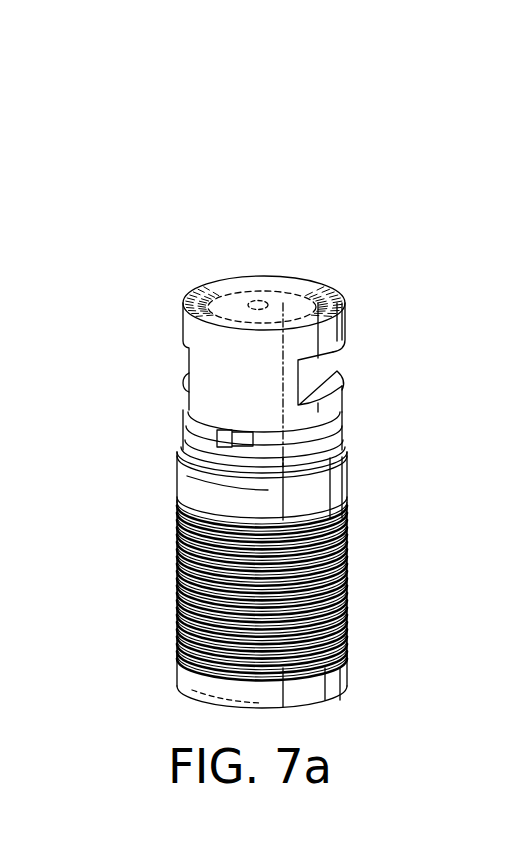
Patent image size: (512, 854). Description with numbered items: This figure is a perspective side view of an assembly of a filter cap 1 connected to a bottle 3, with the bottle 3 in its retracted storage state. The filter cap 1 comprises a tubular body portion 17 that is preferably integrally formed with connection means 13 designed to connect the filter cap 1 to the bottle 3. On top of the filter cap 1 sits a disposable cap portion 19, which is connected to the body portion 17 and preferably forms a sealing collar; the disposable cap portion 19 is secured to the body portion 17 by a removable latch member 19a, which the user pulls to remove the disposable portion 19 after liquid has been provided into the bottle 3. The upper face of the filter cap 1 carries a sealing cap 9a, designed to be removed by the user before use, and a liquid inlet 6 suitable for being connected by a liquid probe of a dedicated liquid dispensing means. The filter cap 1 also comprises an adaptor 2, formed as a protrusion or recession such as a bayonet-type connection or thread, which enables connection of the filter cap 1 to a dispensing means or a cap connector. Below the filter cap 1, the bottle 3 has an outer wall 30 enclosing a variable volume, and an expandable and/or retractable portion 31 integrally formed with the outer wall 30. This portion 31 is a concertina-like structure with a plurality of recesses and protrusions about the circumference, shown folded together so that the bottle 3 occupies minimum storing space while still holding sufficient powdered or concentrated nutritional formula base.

The filter cap 1 is at (382, 311).
The adaptor 2 is at (338, 378).
The bottle 3 is at (349, 665).
The liquid inlet 6 is at (258, 302).
The sealing cap 9a is at (286, 301).
The connection means 13 is at (188, 440).
The tubular body portion 17 is at (190, 431).
The disposable cap portion 19 is at (190, 330).
The removable latch member 19a is at (192, 413).
The outer wall 30 is at (341, 480).
The expandable and/or retractable portion 31 is at (350, 558).